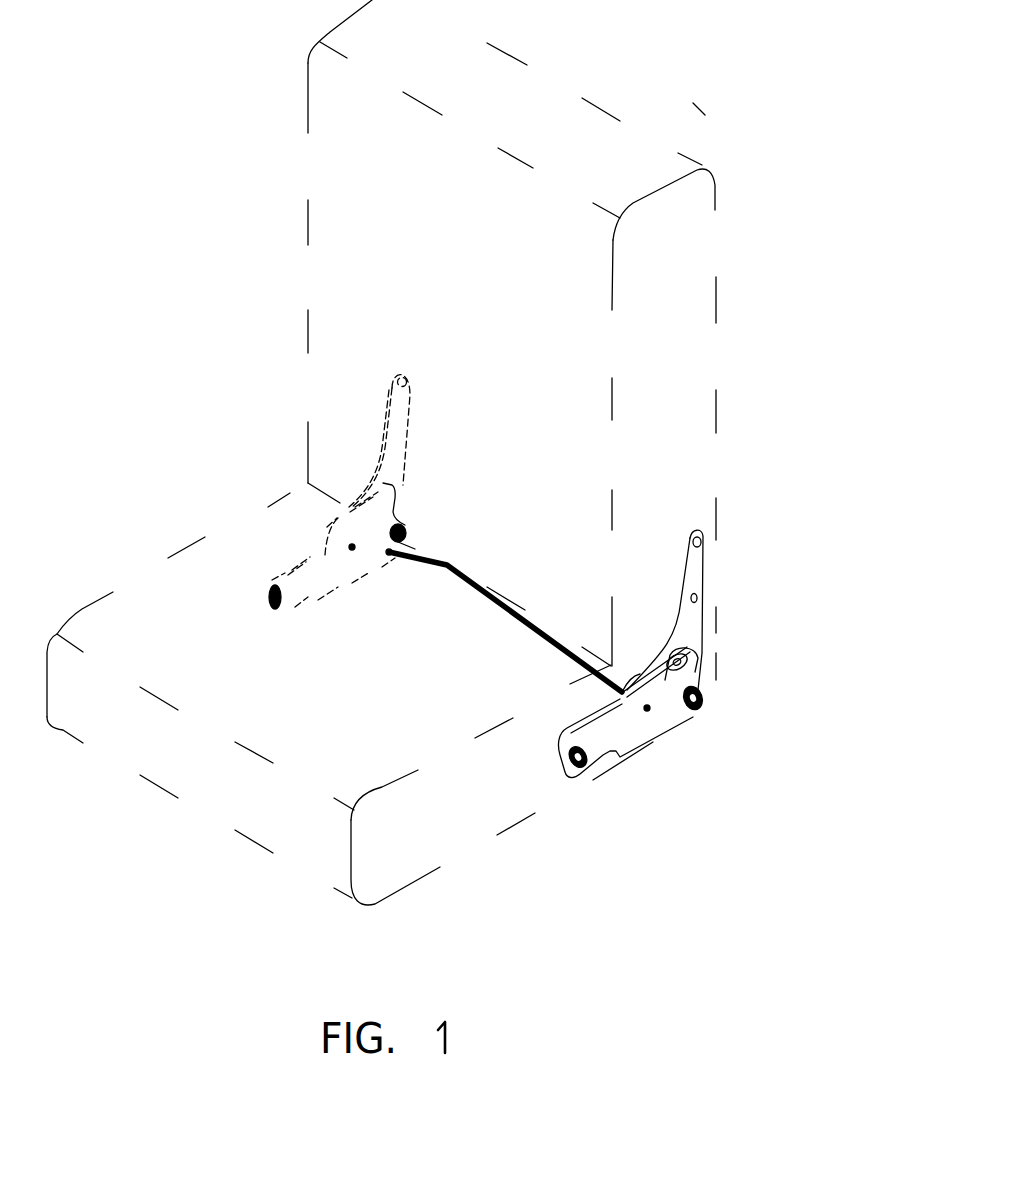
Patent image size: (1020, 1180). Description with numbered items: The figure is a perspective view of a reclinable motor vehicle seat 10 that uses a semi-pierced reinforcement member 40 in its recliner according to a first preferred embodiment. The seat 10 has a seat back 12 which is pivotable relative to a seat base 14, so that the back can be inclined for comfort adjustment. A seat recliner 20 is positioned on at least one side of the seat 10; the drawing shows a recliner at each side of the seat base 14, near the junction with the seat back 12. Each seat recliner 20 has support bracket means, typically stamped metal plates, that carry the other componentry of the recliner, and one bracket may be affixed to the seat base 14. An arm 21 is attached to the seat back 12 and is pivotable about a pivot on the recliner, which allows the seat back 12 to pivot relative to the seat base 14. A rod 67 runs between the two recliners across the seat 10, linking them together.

The motor vehicle seat 10 is at (212, 265).
The seat back 12 is at (449, 231).
The seat base 14 is at (296, 682).
The seat recliner 20 is at (290, 492).
The arm 21 is at (487, 382).
The semi-pierced reinforcement member 40 is at (701, 660).
The connecting rod 67 is at (463, 578).